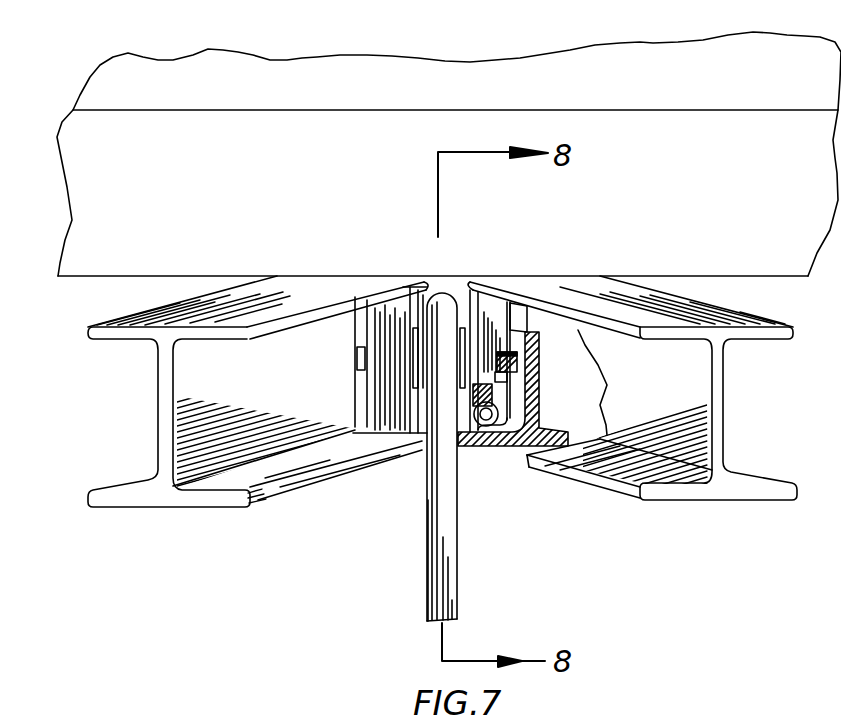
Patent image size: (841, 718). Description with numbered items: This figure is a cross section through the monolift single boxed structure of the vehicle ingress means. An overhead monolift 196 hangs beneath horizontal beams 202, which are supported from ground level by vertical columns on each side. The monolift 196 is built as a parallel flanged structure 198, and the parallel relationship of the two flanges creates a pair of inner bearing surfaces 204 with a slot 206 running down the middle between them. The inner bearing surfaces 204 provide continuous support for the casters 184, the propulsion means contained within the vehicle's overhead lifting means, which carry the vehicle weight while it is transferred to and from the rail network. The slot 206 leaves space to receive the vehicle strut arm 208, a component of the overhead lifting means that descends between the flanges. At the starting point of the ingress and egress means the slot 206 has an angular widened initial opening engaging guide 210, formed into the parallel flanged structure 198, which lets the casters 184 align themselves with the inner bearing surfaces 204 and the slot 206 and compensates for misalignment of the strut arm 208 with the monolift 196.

The horizontal beams 202 is at (288, 56).
The overhead monolift 196 is at (118, 277).
The guide 210 is at (157, 397).
The parallel flanged structure 198 is at (163, 508).
The inner bearing surfaces 204 is at (260, 475).
The casters 184 is at (355, 430).
The slot 206 is at (412, 480).
The strut arm 208 is at (427, 596).